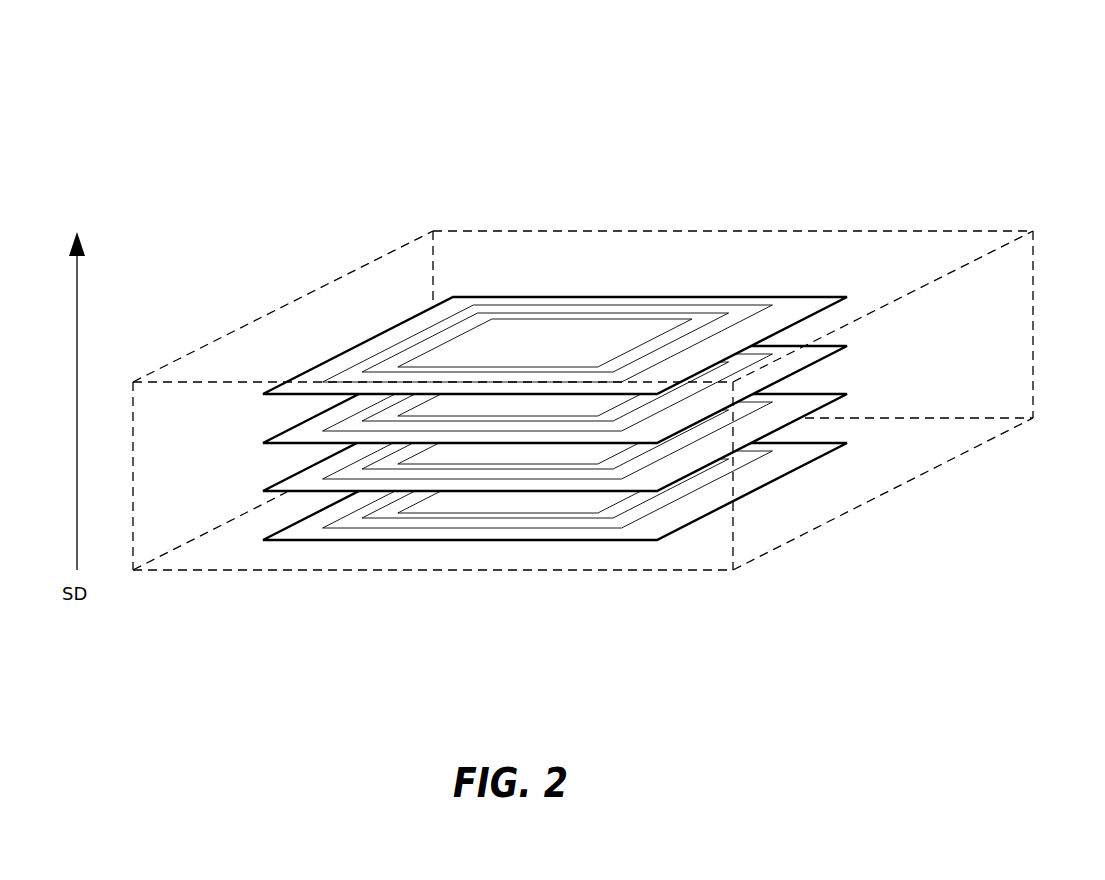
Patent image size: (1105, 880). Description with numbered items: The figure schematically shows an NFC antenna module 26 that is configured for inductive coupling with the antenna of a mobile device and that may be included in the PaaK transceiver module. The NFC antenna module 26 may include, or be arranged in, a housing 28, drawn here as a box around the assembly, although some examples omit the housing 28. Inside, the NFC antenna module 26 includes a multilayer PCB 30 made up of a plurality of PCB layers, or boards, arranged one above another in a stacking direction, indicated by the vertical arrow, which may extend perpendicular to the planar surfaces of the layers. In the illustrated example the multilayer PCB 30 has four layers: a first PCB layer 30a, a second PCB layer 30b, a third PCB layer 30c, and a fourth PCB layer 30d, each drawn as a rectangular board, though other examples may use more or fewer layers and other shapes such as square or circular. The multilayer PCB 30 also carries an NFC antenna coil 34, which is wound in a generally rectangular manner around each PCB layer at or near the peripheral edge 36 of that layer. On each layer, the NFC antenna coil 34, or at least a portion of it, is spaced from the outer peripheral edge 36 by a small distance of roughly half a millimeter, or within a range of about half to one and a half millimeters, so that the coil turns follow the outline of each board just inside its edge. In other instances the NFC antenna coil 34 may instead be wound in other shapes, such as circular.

The NFC antenna module 26 is at (739, 97).
The housing 28 is at (958, 230).
The multilayer PCB 30 is at (768, 249).
The first PCB layer 30a is at (572, 285).
The second PCB layer 30b is at (845, 347).
The third PCB layer 30c is at (845, 395).
The fourth PCB layer 30d is at (845, 443).
The NFC antenna coil 34 is at (402, 343).
The peripheral edge 36 is at (453, 298).